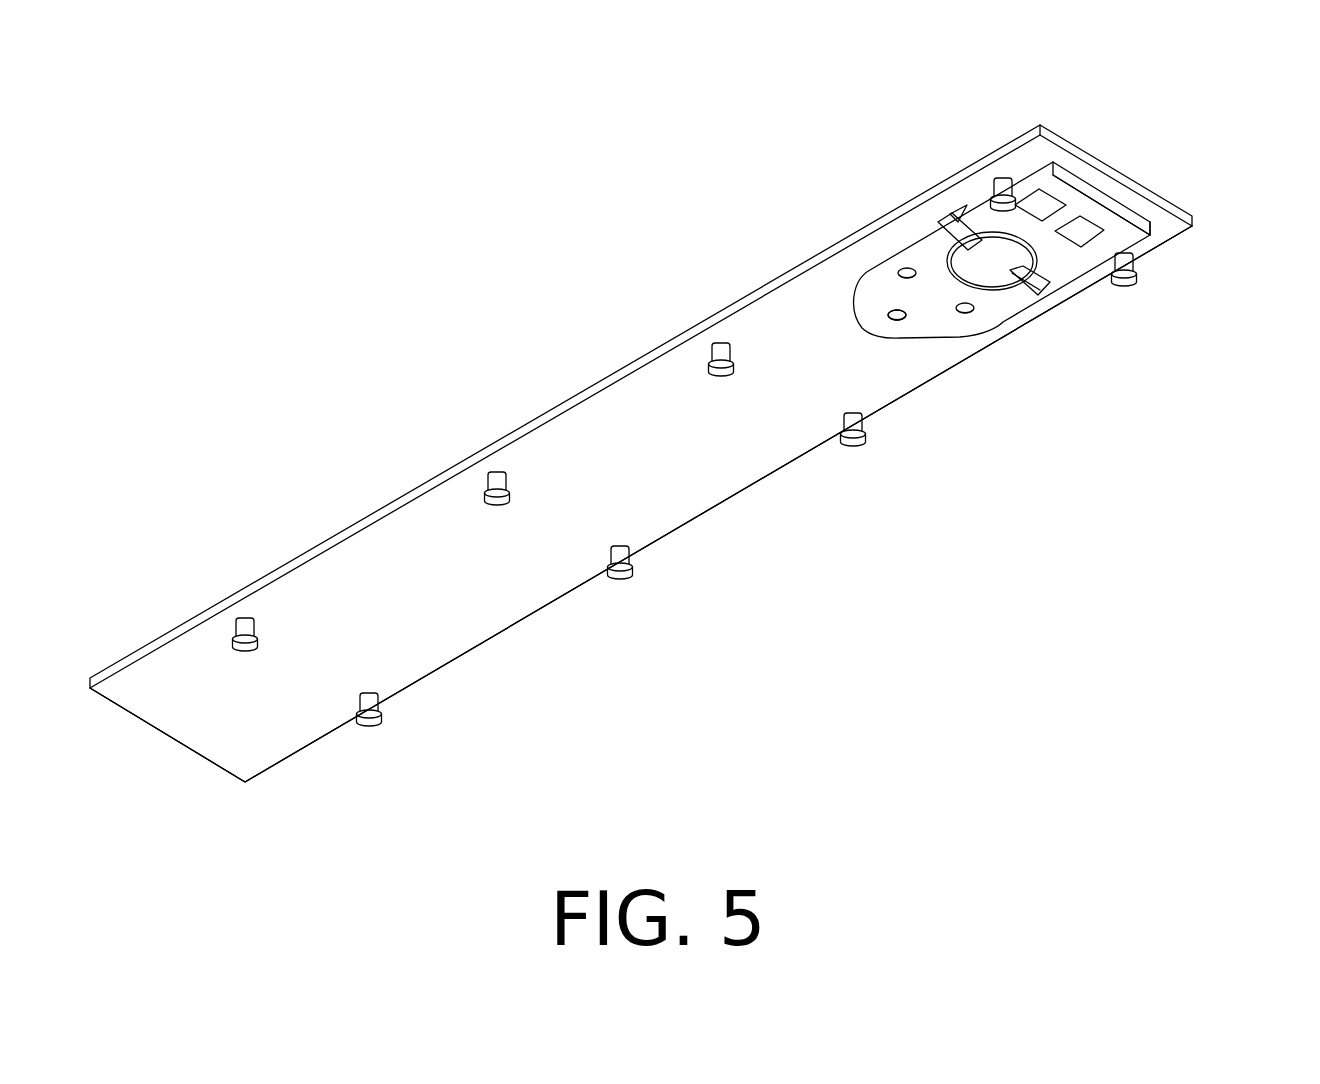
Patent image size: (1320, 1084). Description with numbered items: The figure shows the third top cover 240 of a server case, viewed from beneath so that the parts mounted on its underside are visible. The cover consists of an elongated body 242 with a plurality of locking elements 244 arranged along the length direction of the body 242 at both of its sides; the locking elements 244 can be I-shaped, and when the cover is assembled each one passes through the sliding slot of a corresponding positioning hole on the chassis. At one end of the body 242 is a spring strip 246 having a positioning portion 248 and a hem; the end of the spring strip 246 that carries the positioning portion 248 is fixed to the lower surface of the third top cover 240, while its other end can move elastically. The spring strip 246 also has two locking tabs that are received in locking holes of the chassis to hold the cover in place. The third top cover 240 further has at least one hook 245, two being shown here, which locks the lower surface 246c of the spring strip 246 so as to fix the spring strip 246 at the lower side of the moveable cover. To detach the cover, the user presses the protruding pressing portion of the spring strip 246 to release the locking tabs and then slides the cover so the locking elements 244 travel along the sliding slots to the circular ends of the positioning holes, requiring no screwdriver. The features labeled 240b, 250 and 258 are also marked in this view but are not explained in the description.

The third top cover 240 is at (1103, 145).
The bottom surface of plate 240b is at (695, 462).
The body 242 is at (567, 455).
The locking elements 244 is at (718, 340).
The hook 245 is at (940, 214).
The spring strip 246 is at (922, 262).
The lower surface of the spring strip 246c is at (928, 317).
The positioning portion 248 is at (965, 310).
The supporting block 250 is at (1137, 207).
The edge of supporting block 258 is at (1150, 235).